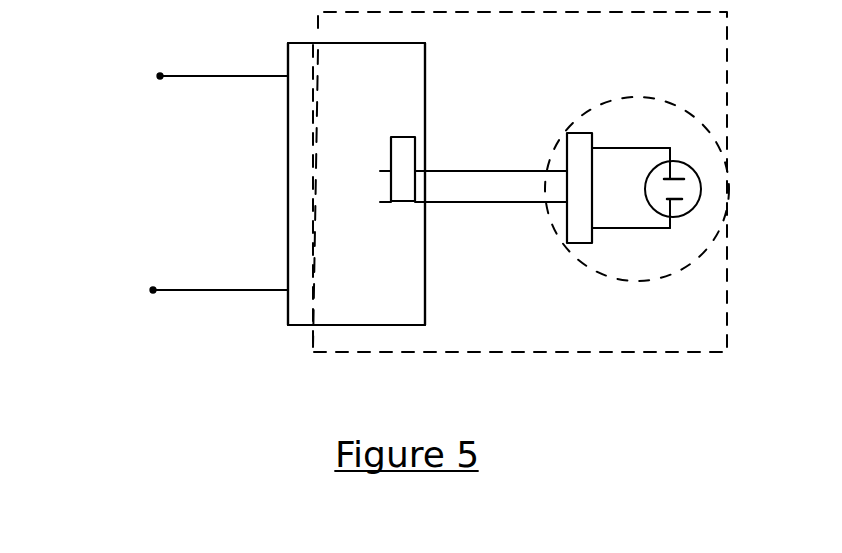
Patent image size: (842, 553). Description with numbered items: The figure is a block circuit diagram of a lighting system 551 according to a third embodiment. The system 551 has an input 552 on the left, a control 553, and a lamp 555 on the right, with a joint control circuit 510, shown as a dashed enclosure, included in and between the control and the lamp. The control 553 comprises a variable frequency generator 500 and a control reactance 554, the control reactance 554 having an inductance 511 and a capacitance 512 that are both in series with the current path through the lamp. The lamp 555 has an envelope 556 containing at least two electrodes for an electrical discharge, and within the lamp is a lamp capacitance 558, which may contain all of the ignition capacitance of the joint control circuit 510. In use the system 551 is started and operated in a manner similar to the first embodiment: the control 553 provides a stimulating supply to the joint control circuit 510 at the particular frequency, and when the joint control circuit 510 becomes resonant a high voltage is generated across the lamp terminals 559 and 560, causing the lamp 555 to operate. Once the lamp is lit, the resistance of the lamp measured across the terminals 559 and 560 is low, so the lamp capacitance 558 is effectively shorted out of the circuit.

The variable frequency generator 500 is at (352, 212).
The joint control circuit 510 is at (317, 18).
The inductance 511 is at (408, 72).
The capacitance 512 is at (413, 149).
The lighting system 551 is at (264, 360).
The input 552 is at (160, 92).
The control 553 is at (266, 150).
The control reactance 554 is at (398, 305).
The lamp 555 is at (598, 107).
The envelope 556 is at (752, 158).
The lamp capacitance 558 is at (565, 241).
The lamp terminal 559 is at (663, 160).
The lamp terminal 560 is at (668, 223).